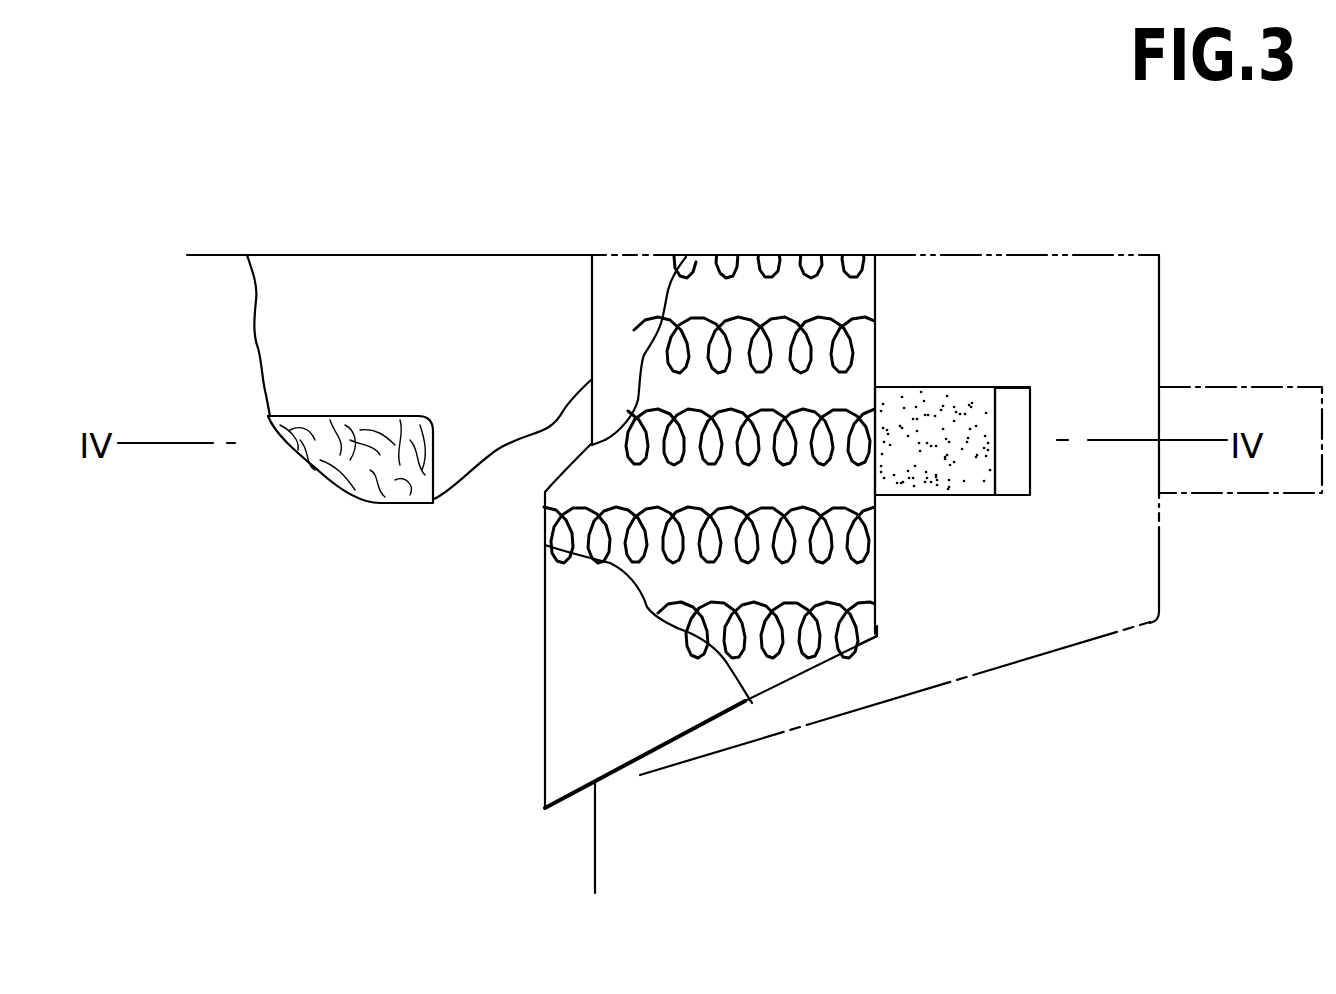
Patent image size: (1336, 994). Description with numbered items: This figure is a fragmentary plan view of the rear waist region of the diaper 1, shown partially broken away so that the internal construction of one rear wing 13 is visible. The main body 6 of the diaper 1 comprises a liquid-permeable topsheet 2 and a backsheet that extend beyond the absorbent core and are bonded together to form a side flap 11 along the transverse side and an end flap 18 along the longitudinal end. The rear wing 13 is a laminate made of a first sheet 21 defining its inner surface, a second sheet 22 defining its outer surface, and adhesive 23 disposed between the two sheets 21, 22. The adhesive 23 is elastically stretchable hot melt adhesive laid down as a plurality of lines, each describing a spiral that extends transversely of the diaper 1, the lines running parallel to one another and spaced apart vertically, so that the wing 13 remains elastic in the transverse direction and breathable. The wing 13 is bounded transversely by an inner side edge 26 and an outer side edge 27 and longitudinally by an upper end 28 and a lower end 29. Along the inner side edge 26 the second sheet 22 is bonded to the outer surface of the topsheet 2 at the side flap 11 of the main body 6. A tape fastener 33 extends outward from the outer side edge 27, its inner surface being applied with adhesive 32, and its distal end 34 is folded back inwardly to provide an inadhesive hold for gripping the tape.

The diaper 1 is at (926, 118).
The liquid-permeable topsheet 2 is at (507, 458).
The main body 6 is at (312, 243).
The side flap 11 is at (585, 855).
The rear wing 13 is at (688, 244).
The end flap 18 is at (214, 275).
The first sheet 21 is at (723, 705).
The second sheet 22 is at (780, 678).
The adhesive 23 is at (880, 637).
The inner side edge 26 is at (558, 662).
The outer side edge 27 is at (862, 573).
The upper end 28 is at (753, 265).
The lower end 29 is at (668, 733).
The adhesive 32 is at (968, 483).
The tape fastener 33 is at (962, 374).
The distal end 34 is at (1013, 457).